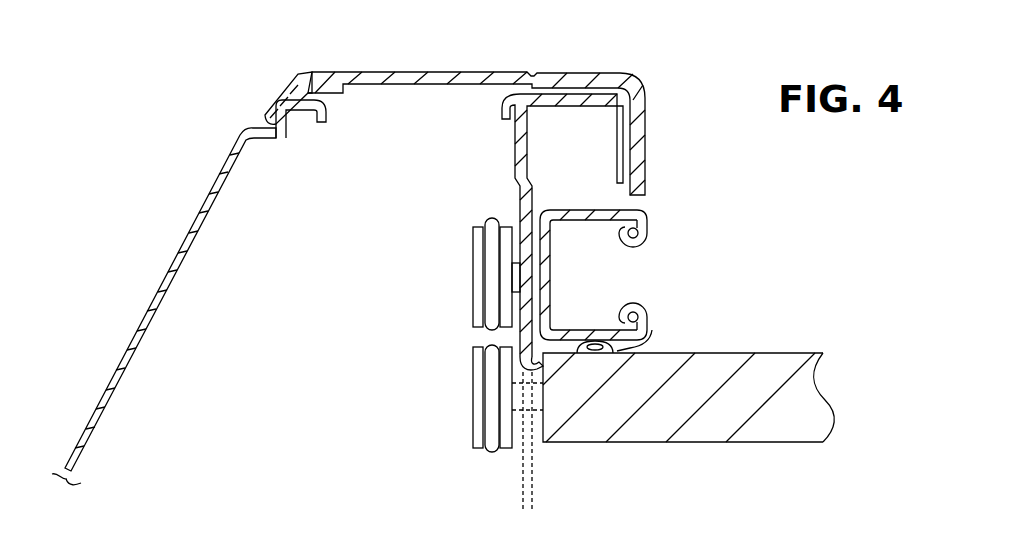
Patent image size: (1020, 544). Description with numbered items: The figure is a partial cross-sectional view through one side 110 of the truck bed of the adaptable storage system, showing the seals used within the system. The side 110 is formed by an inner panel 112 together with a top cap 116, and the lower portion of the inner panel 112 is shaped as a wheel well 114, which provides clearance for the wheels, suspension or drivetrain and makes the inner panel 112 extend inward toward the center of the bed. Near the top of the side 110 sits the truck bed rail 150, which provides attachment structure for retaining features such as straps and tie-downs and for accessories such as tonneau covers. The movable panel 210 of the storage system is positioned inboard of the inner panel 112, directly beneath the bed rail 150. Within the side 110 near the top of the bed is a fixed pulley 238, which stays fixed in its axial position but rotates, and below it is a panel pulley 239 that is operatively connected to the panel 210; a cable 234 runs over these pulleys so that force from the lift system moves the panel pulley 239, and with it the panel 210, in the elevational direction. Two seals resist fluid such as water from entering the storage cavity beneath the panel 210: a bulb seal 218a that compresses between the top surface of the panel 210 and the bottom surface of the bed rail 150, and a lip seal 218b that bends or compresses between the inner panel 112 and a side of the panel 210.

The side 110 is at (237, 265).
The inner panel 112 is at (523, 147).
The wheel well 114 is at (163, 268).
The top cap 116 is at (422, 70).
The truck bed rail 150 is at (651, 228).
The panel 210 is at (803, 398).
The seal 218a is at (660, 330).
The seal 218b is at (538, 365).
The cable 234 is at (495, 335).
The fixed pulley 238 is at (473, 286).
The panel pulley 239 is at (473, 430).